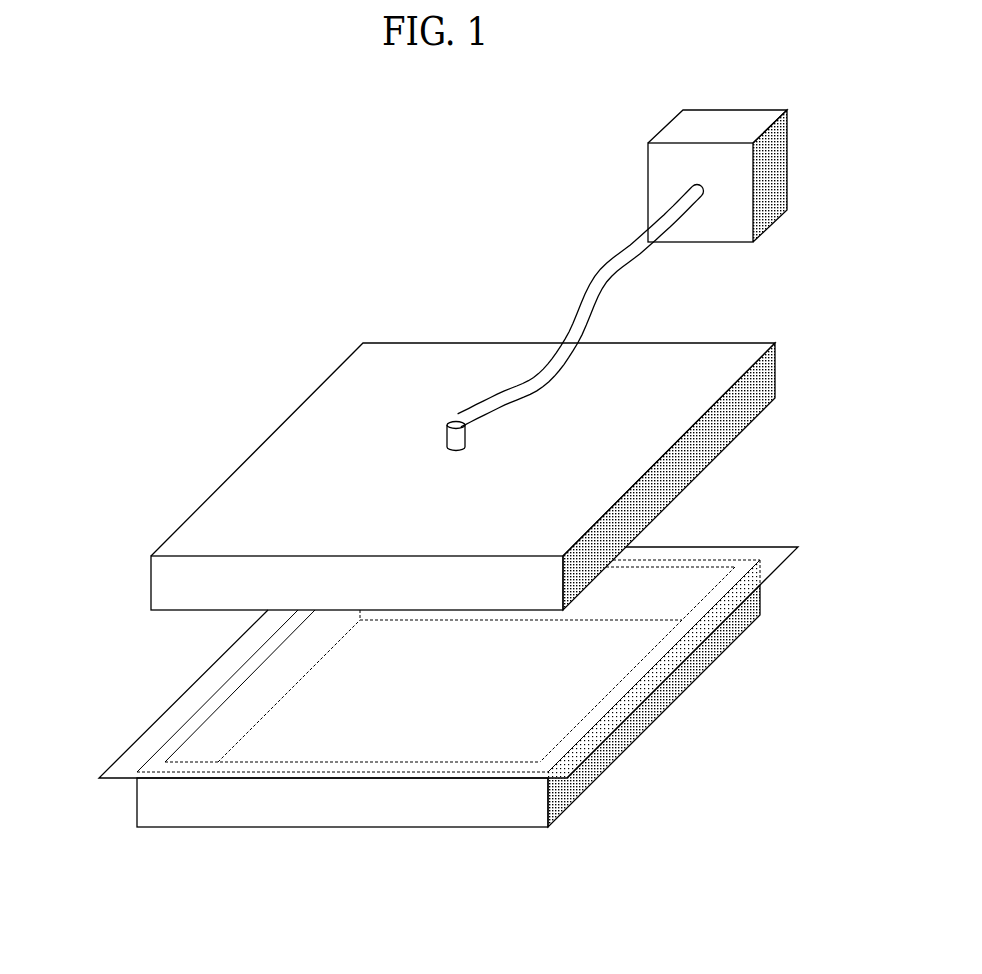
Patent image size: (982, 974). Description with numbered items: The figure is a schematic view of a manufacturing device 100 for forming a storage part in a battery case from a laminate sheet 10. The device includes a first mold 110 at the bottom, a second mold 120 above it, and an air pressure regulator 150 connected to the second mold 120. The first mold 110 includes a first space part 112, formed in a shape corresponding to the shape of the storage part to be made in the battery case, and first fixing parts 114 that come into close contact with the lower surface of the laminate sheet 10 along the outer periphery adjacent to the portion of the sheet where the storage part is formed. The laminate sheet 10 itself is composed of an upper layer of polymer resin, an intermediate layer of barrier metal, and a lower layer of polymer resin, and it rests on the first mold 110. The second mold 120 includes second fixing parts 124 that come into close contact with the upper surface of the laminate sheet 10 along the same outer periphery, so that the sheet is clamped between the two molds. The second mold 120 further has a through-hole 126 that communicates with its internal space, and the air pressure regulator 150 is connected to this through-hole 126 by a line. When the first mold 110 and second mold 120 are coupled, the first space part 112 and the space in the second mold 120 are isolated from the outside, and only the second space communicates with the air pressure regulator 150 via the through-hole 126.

The manufacturing device 100 is at (167, 277).
The laminate sheet 10 is at (772, 553).
The first mold 110 is at (628, 732).
The first space part 112 is at (303, 725).
The first fixing parts 114 is at (158, 807).
The second mold 120 is at (353, 378).
The second fixing parts 124 is at (168, 584).
The through-hole 126 is at (457, 408).
The air pressure regulator 150 is at (705, 125).